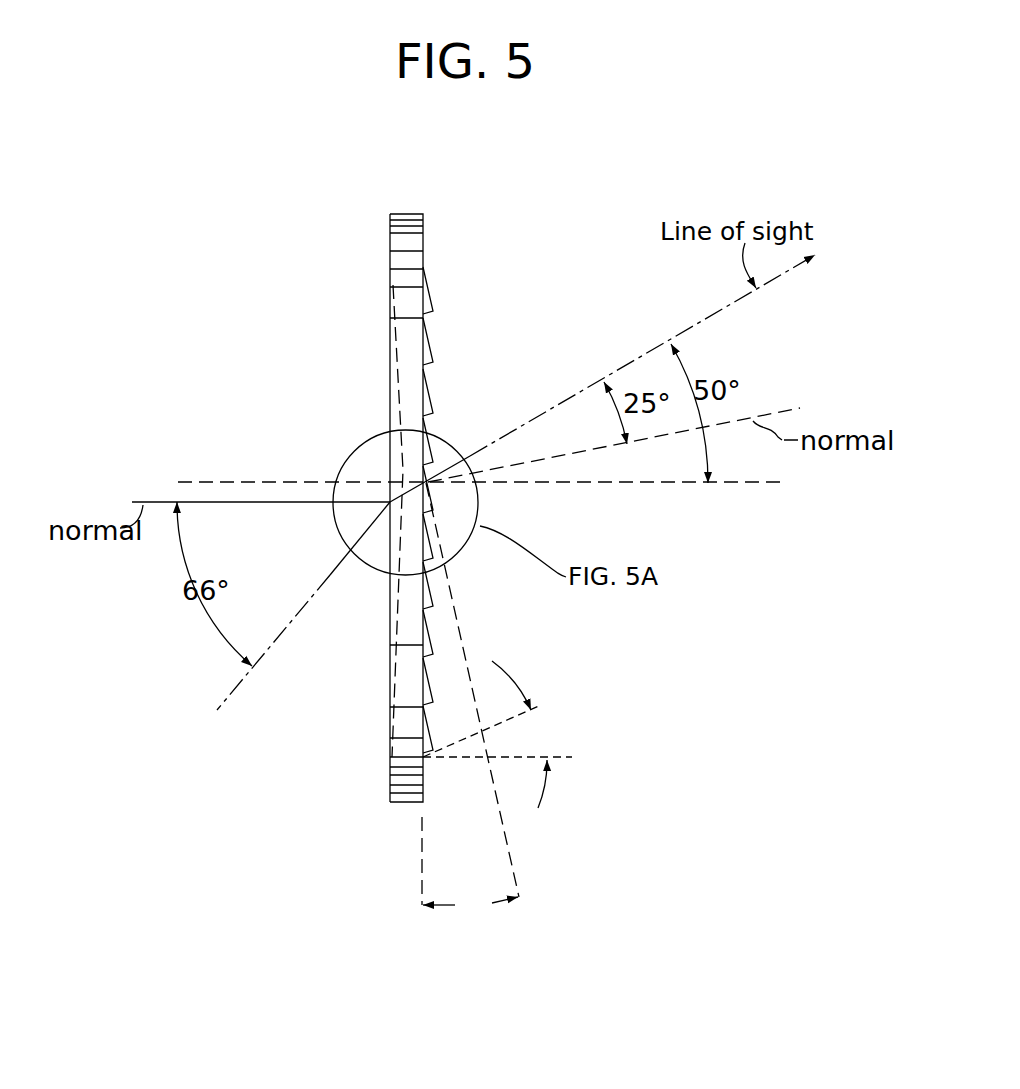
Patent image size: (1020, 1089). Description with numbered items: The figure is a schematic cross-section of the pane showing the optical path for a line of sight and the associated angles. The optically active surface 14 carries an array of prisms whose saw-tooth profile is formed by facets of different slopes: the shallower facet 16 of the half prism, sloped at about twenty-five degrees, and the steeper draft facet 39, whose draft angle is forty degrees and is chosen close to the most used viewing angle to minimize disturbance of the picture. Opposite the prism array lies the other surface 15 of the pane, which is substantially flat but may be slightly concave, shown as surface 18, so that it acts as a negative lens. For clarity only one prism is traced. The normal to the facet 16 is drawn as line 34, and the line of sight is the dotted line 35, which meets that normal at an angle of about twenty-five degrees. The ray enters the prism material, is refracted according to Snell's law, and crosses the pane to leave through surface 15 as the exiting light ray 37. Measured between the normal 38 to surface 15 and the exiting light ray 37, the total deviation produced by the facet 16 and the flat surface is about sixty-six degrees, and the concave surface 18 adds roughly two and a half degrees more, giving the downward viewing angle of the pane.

The optically active surface 14 is at (420, 397).
The other surface of the pane 15 is at (392, 290).
The facet of the half prism 16 is at (428, 340).
The concave surface 18 is at (392, 416).
The normal to the facet 34 is at (537, 462).
The line of sight 35 is at (524, 425).
The exiting light ray 37 is at (270, 648).
The normal to the surface 38 is at (225, 502).
The draft facet 39 is at (433, 552).